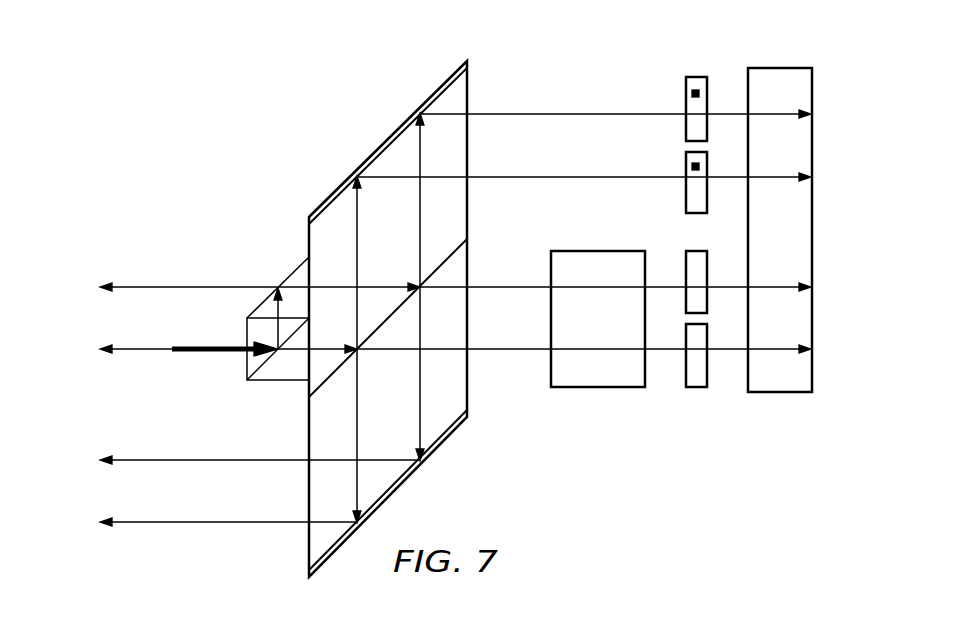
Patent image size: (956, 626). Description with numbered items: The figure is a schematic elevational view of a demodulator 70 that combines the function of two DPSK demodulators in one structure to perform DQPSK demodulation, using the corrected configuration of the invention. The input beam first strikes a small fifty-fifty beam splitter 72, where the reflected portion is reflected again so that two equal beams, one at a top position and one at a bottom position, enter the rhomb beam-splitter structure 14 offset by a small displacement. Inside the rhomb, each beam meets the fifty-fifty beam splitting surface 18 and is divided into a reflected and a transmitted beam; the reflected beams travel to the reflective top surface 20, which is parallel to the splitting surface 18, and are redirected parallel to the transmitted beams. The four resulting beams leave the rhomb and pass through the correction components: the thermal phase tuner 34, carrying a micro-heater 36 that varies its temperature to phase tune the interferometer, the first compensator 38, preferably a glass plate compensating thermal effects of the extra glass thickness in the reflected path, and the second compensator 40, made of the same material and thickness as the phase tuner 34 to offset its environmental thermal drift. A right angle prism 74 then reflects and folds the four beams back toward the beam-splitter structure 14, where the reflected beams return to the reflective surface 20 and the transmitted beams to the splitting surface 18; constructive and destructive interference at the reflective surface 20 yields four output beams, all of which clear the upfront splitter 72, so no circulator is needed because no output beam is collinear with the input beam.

The demodulator 70 is at (328, 74).
The rhomb beam-splitter structure 14 is at (419, 319).
The reflective top surface 20 is at (453, 80).
The beam splitting surface 18 is at (457, 250).
The small 50/50 beam splitter 72 is at (263, 373).
The thermal phase tuner 34 is at (676, 118).
The micro-heater 36 is at (688, 93).
The first compensator 38 is at (597, 387).
The second compensator 40 is at (686, 252).
The right angle prism 74 is at (780, 68).